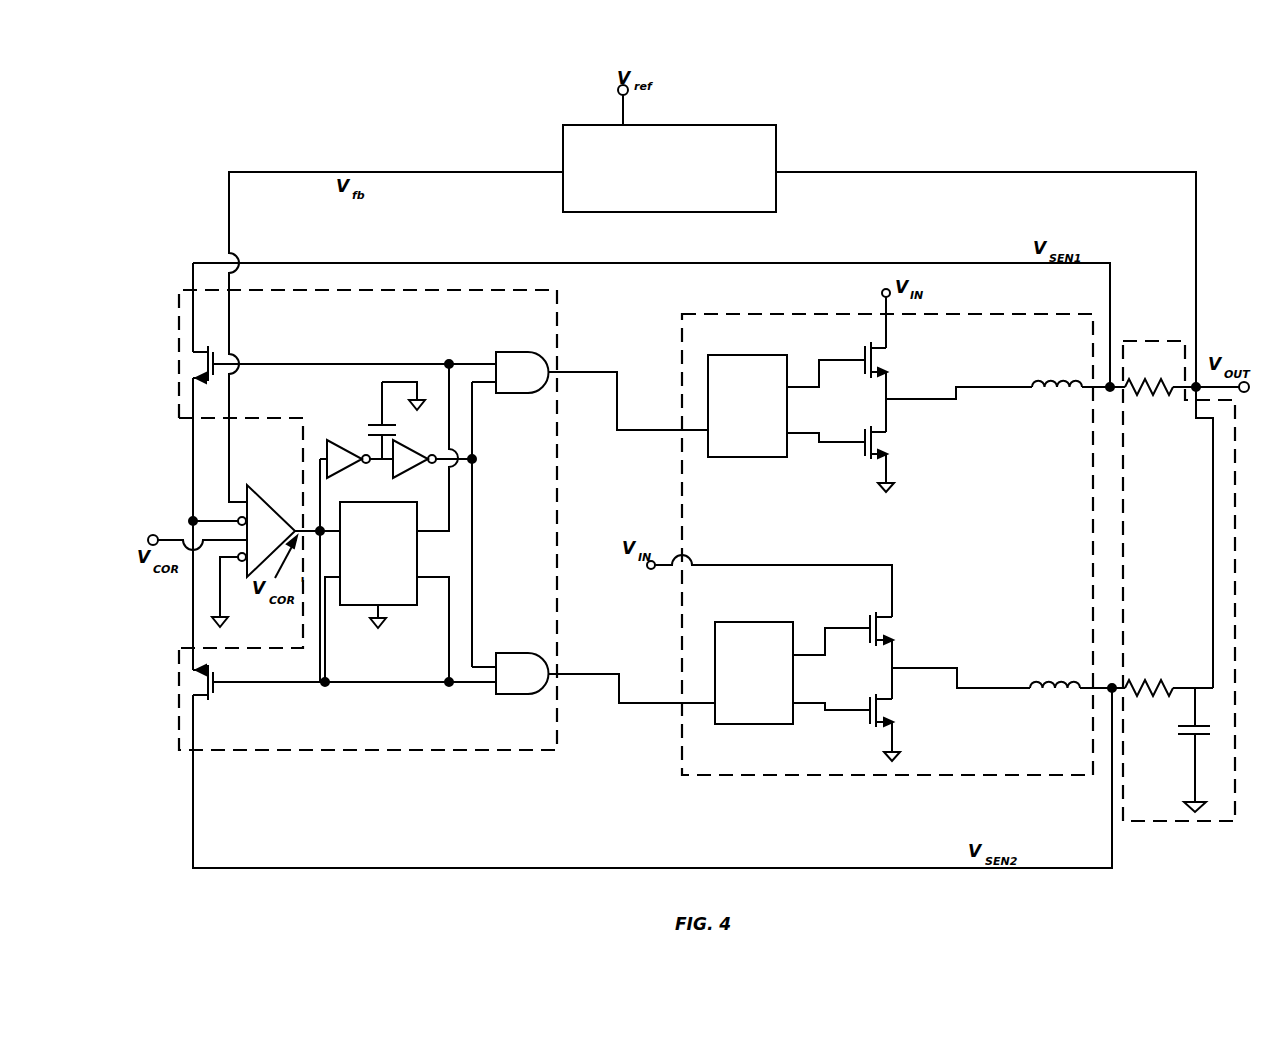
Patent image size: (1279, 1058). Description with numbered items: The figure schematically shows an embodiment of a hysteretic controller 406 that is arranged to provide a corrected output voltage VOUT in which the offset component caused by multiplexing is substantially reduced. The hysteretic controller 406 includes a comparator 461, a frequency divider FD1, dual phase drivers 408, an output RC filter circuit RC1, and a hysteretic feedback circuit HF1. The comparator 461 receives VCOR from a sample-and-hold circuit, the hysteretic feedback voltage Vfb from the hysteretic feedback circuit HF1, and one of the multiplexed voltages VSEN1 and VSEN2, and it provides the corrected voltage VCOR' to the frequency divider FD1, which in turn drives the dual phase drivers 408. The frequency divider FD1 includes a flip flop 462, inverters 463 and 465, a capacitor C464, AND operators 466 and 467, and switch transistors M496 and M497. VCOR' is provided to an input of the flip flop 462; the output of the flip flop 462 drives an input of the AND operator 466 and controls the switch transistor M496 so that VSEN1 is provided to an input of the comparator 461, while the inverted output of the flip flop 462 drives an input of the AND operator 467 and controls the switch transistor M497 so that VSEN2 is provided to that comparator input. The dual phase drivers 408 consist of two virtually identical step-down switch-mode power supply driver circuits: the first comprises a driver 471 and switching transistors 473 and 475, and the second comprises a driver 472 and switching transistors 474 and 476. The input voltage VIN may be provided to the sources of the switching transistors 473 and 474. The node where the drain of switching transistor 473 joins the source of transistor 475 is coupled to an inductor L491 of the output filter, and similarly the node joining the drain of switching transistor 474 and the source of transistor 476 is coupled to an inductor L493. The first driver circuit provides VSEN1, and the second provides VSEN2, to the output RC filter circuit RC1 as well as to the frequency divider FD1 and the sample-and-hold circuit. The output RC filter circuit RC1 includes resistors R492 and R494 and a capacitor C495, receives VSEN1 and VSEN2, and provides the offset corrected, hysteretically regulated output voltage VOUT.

The hysteretic controller 406 is at (1090, 100).
The hysteretic feedback circuit HF1 is at (776, 192).
The frequency divider FD1 is at (447, 750).
The dual phase drivers 408 is at (1037, 775).
The output RC filter circuit RC1 is at (1175, 821).
The switch transistor M496 is at (214, 362).
The switch transistor M497 is at (219, 688).
The comparator 461 is at (270, 502).
The flip flop 462 is at (407, 606).
The inverter 463 is at (344, 441).
The capacitor C464 is at (380, 403).
The inverter 465 is at (410, 440).
The AND operator 466 is at (524, 352).
The AND operator 467 is at (525, 652).
The driver 471 is at (760, 458).
The driver 472 is at (790, 640).
The switching transistor 473 is at (878, 360).
The switching transistor 474 is at (886, 624).
The switching transistor 475 is at (878, 437).
The switching transistor 476 is at (888, 702).
The inductor L491 is at (1051, 375).
The resistor R492 is at (1153, 379).
The inductor L493 is at (1052, 676).
The resistor R494 is at (1153, 680).
The capacitor C495 is at (1180, 738).